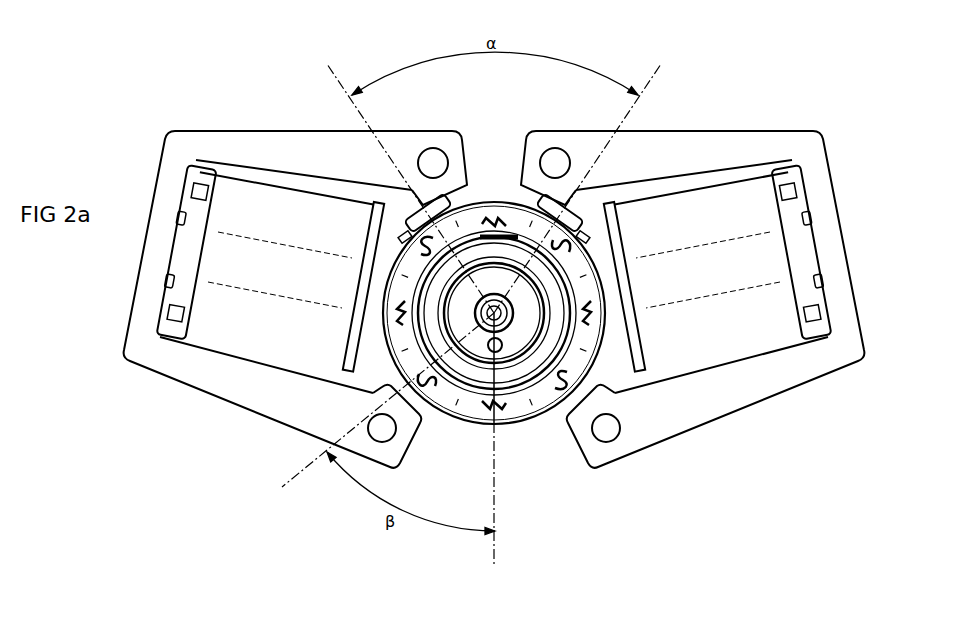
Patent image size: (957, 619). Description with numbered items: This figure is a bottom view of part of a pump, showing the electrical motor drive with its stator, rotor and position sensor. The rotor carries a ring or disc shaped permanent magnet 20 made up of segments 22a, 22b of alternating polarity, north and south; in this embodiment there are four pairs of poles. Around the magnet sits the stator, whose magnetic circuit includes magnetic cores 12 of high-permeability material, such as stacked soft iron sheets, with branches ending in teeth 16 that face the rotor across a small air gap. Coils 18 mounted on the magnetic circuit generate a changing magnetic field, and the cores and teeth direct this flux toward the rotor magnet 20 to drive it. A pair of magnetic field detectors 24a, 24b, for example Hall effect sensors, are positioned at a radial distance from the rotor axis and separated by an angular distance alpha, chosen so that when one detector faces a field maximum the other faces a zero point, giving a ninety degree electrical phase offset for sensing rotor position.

The magnetic core 12 is at (178, 363).
The teeth 16 is at (502, 195).
The coil 18 is at (233, 345).
The permanent magnet 20 is at (533, 430).
The segment 22a is at (503, 410).
The segment 22b is at (556, 392).
The magnetic field detector 24a is at (427, 217).
The magnetic field detector 24b is at (560, 218).